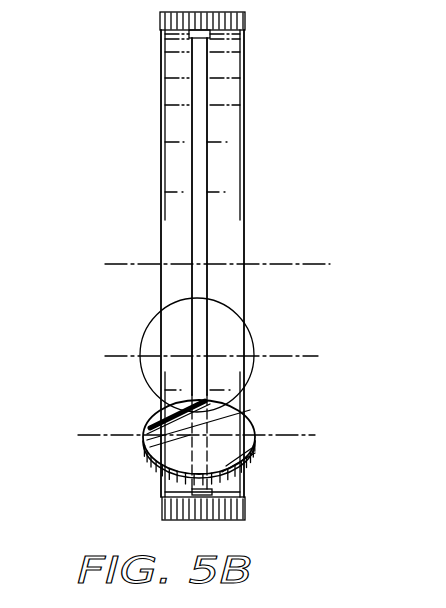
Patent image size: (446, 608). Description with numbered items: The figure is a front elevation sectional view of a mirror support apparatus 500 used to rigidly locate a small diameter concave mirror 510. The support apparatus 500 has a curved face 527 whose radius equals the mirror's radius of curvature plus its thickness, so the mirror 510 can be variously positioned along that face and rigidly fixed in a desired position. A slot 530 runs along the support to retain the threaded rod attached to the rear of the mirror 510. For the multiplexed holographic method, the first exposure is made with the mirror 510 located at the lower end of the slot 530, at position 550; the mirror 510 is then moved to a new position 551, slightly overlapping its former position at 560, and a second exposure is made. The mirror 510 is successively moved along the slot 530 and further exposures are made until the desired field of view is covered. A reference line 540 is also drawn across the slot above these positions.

The mirror support apparatus 500 is at (160, 104).
The curved face 527 is at (229, 92).
The slot 530 is at (203, 232).
The reference plane 540 is at (300, 263).
The new position 551 is at (272, 356).
The position 550 is at (290, 420).
The overlap 560 is at (200, 393).
The concave mirror 510 is at (255, 465).